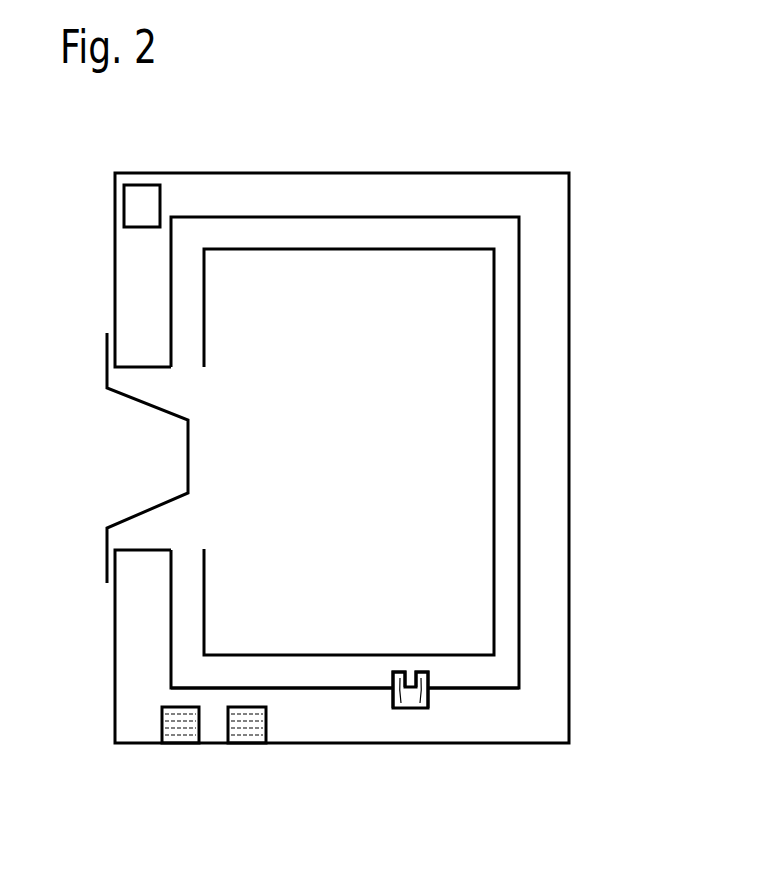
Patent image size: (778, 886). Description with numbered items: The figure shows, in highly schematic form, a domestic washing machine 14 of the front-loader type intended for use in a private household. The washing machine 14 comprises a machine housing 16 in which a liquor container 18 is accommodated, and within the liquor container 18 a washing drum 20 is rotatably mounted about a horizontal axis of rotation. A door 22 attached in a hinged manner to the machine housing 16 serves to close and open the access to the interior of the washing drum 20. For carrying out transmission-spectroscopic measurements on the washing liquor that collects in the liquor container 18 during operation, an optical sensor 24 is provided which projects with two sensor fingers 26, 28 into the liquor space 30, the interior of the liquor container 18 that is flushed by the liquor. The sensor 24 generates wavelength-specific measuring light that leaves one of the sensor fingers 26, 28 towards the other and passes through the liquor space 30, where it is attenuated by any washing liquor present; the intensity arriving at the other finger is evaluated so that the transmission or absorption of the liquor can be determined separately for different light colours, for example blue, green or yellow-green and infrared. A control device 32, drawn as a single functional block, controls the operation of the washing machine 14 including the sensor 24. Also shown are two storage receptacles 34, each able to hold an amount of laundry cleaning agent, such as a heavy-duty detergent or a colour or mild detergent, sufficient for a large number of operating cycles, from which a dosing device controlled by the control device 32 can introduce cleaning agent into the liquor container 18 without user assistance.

The washing machine 14 is at (513, 135).
The machine housing 16 is at (569, 273).
The liquor container 18 is at (520, 409).
The washing drum 20 is at (494, 482).
The door 22 is at (147, 405).
The optical sensor 24 is at (408, 708).
The sensor finger 26 is at (395, 712).
The sensor finger 28 is at (425, 712).
The interior of the liquor container 30 is at (289, 680).
The control device 32 is at (125, 207).
The storage receptacles 34 is at (180, 745).